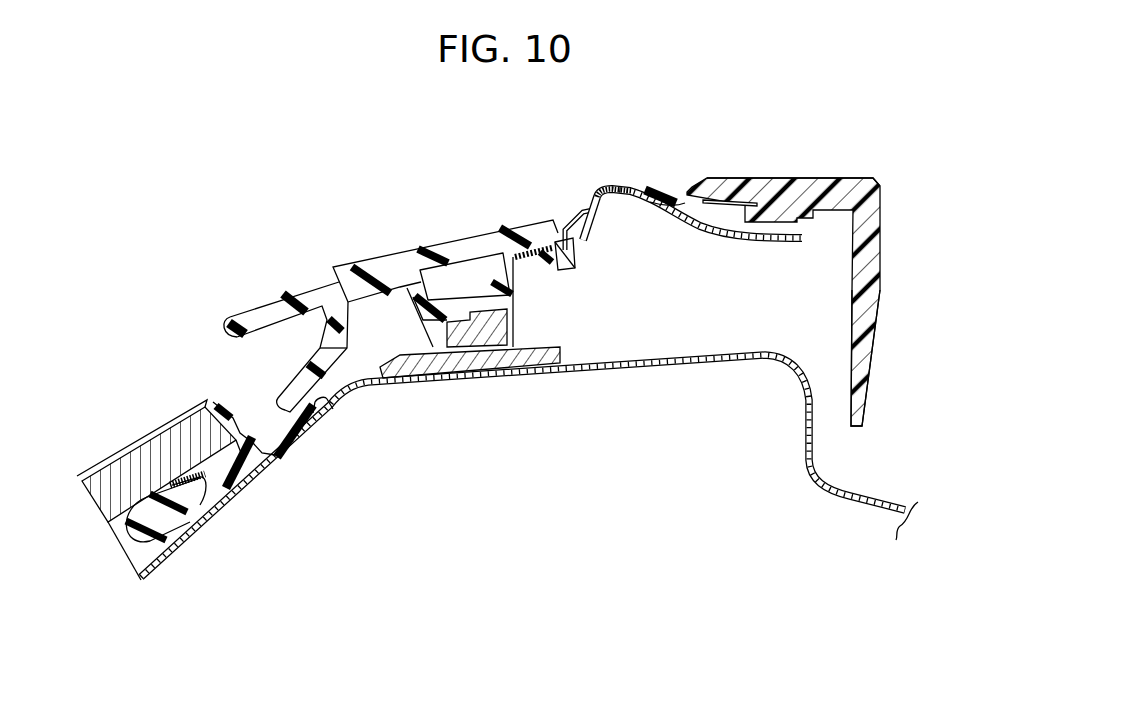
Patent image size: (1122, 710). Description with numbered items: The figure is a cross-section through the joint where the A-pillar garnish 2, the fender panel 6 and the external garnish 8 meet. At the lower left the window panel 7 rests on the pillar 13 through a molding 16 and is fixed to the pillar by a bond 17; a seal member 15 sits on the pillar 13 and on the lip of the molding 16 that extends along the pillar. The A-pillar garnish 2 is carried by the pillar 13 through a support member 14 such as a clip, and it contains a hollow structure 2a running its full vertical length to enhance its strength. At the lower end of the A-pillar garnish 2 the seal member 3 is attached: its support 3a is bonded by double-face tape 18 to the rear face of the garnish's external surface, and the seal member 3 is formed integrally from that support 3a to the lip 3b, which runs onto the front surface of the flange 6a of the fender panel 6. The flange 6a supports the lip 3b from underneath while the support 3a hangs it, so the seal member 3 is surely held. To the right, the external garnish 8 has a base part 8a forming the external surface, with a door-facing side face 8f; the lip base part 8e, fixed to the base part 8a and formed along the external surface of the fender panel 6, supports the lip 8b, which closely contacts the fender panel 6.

The A-pillar garnish 2 is at (391, 299).
The hollow structure 2a is at (465, 281).
The seal member 3 is at (529, 242).
The support 3a is at (527, 275).
The lip 3b is at (568, 228).
The fender panel 6 is at (692, 204).
The flange 6a is at (588, 242).
The window panel 7 is at (148, 446).
The external garnish 8 is at (795, 264).
The base part 8a is at (803, 193).
The lip 8b is at (668, 190).
The lip base part 8e is at (750, 207).
The door-facing side face 8f is at (881, 259).
The pillar 13 is at (684, 364).
The support member 14 is at (462, 383).
The seal member 15 is at (320, 400).
The molding 16 is at (243, 478).
The bond 17 is at (173, 522).
The double-face tape 18 is at (547, 250).